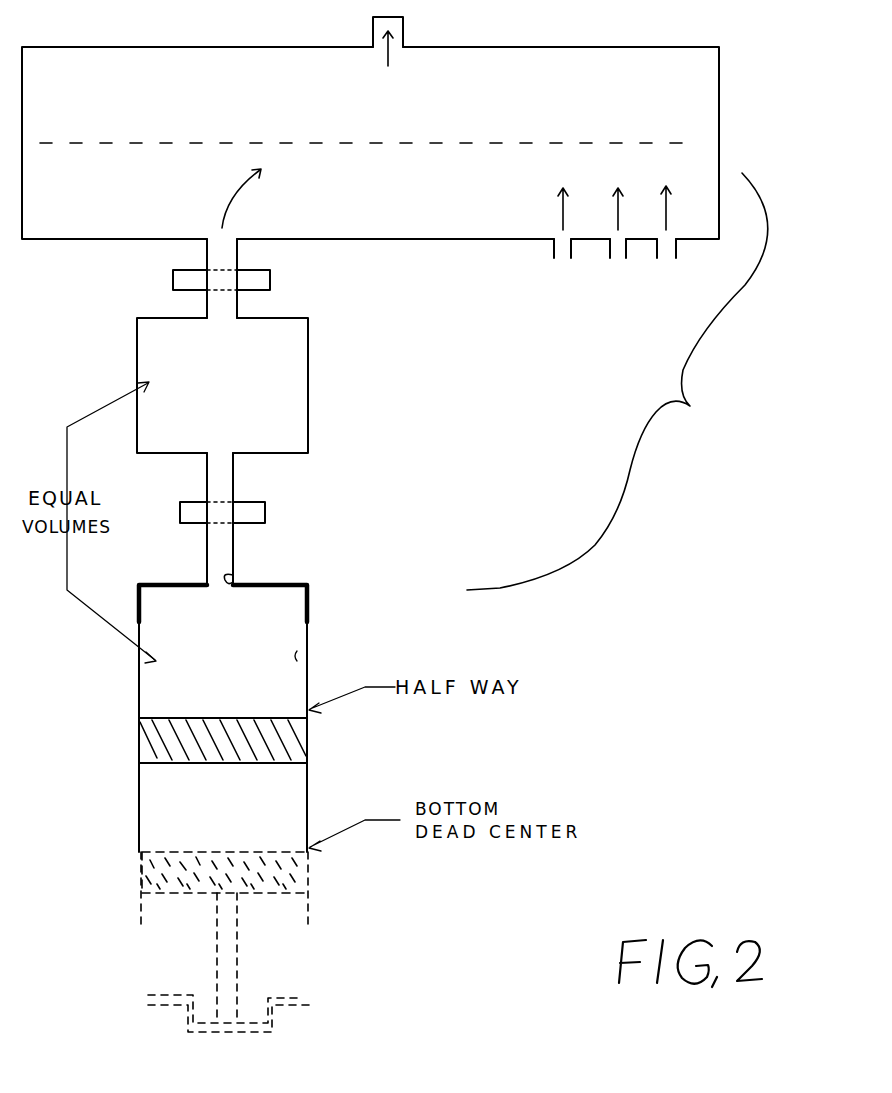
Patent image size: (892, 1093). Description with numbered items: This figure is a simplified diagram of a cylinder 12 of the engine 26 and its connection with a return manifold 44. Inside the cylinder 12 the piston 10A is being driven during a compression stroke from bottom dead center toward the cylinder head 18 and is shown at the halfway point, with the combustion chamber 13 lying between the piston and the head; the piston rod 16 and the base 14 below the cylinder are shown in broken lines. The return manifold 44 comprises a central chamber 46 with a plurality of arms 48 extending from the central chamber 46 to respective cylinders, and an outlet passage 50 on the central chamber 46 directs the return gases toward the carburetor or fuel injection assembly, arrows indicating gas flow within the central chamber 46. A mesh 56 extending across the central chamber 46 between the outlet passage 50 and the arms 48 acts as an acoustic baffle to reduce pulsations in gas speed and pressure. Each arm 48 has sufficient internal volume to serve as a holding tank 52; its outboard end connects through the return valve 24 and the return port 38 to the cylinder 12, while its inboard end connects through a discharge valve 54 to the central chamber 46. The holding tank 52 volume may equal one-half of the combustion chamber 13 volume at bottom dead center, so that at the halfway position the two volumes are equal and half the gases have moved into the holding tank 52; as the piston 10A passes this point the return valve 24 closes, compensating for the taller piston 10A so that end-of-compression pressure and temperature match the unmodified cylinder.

The piston 10A is at (310, 727).
The cylinder 12 is at (310, 641).
The combustion chamber 13 is at (247, 665).
The base 14 is at (290, 992).
The piston rod 16 is at (240, 927).
The cylinder head 18 is at (310, 592).
The return valve 24 is at (265, 515).
The engine 26 is at (614, 621).
The return port 38 is at (233, 575).
The return manifold 44 is at (650, 381).
The central chamber 46 is at (719, 90).
The arms 48 is at (55, 366).
The outlet passage 50 is at (404, 30).
The holding tank 52 is at (308, 366).
The discharge valve 54 is at (270, 282).
The mesh 56 is at (518, 137).